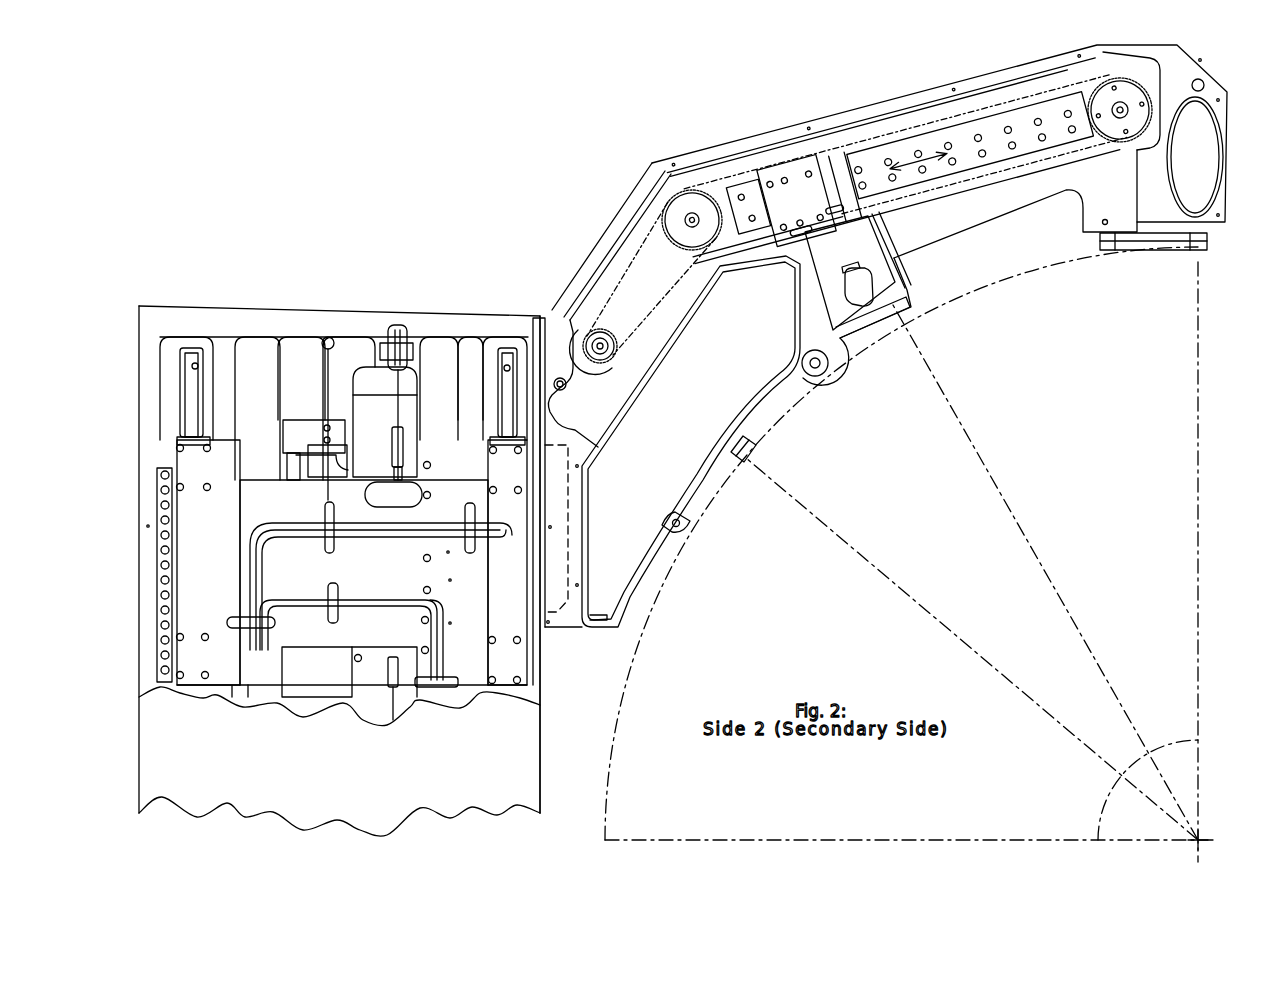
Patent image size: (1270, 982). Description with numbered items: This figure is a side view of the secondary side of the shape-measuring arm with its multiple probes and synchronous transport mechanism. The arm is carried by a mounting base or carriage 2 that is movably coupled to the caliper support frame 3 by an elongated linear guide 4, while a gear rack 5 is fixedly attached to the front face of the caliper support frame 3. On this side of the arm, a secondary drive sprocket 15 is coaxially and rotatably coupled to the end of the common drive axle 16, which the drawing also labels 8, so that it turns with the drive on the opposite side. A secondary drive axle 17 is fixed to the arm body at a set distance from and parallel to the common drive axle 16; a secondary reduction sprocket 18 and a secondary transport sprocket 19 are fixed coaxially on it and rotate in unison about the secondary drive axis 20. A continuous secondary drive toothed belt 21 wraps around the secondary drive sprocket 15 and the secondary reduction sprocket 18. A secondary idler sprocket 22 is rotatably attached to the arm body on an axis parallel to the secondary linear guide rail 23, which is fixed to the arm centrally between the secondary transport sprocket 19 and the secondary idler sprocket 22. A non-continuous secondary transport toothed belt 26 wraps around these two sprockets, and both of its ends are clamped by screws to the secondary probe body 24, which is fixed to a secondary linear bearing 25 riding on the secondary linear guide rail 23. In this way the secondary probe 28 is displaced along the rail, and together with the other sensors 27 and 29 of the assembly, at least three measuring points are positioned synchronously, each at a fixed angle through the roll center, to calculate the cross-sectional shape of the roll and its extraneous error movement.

The mounting base or carriage 2 is at (560, 608).
The caliper support frame 3 is at (340, 308).
The elongated linear guide 4 is at (185, 345).
The gear rack 5 is at (530, 320).
The shaft 8 is at (605, 349).
The secondary drive sprocket 15 is at (596, 340).
The common drive axle 16 is at (600, 346).
The secondary drive axle 17 is at (691, 219).
The secondary reduction sprocket 18 is at (638, 265).
The secondary transport sprocket 19 is at (692, 220).
The secondary drive axis 20 is at (691, 219).
The secondary drive toothed belt 21 is at (658, 302).
The secondary idler sprocket 22 is at (1120, 110).
The secondary linear guide rail 23 is at (970, 145).
The secondary probe body 24 is at (917, 287).
The secondary linear bearing 25 is at (748, 206).
The secondary transport toothed belt 26 is at (984, 175).
The sensor 27 is at (1182, 270).
The secondary probe 28 is at (881, 369).
The sensor 29 is at (756, 491).